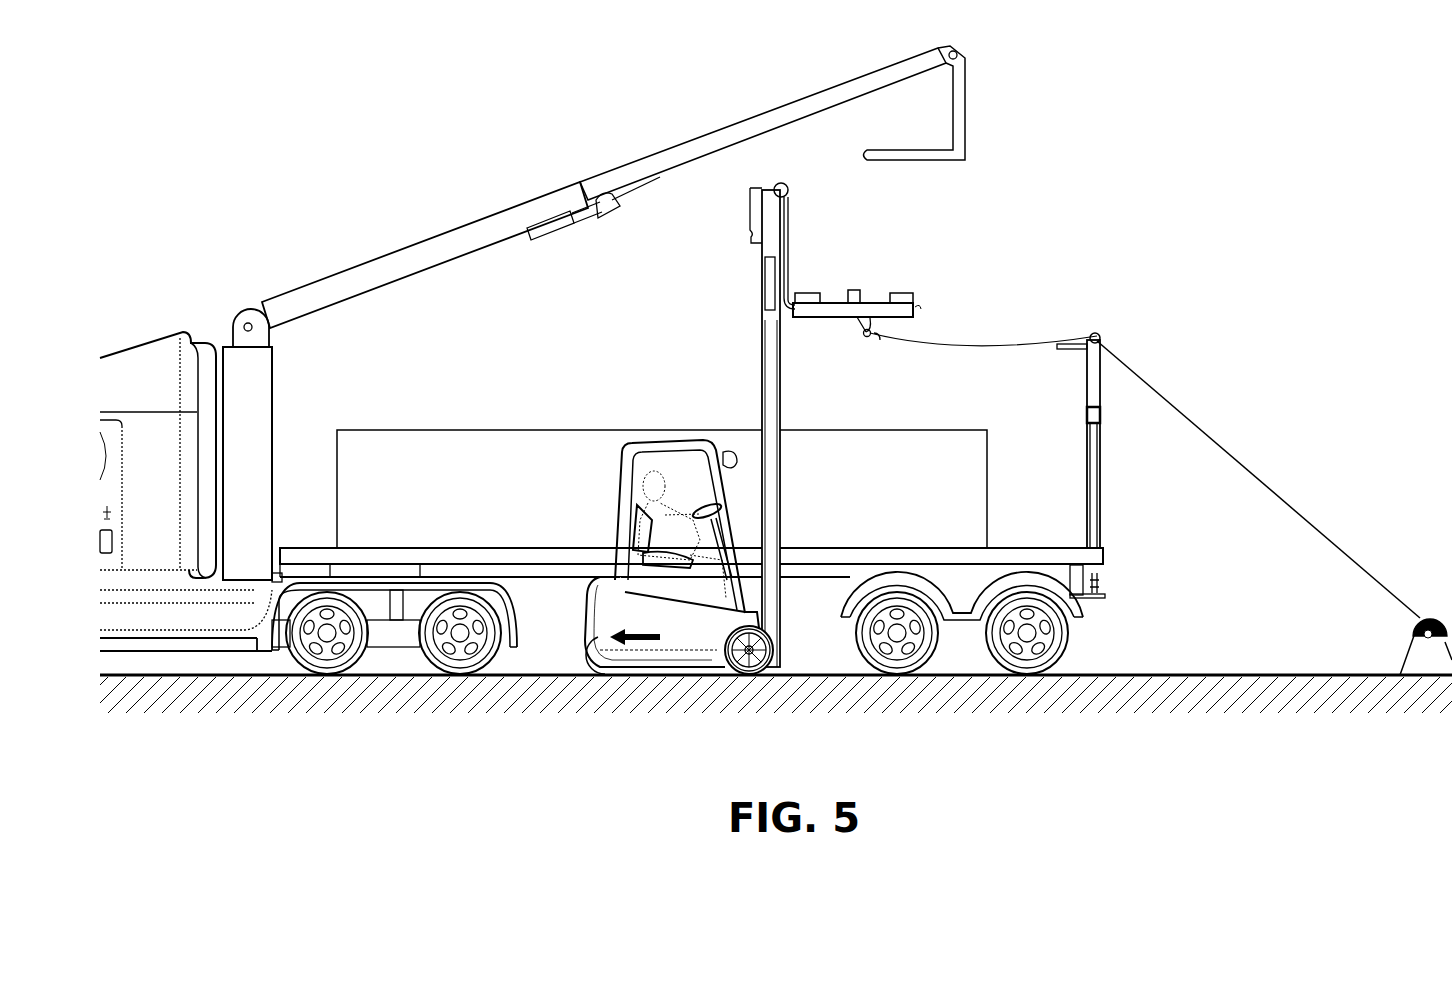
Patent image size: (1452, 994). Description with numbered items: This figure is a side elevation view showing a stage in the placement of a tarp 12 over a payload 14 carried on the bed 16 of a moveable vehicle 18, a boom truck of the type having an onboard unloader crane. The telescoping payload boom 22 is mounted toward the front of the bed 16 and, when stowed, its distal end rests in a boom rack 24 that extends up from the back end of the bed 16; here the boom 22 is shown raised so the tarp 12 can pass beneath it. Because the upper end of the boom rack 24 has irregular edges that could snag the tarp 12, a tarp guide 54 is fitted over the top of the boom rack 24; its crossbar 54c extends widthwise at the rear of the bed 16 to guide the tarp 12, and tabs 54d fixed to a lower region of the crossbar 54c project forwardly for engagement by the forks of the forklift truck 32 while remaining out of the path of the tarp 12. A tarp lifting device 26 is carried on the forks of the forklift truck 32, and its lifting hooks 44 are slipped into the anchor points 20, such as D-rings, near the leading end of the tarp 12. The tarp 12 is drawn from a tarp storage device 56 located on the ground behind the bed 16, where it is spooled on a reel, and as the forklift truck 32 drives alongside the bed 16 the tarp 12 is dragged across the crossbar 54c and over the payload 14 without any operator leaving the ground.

The tarp 12 is at (1002, 340).
The payload 14 is at (463, 497).
The bed 16 is at (1004, 548).
The moveable vehicle 18 is at (147, 342).
The anchor points 20 is at (880, 340).
The telescoping payload boom 22 is at (718, 131).
The boom rack 24 is at (1101, 490).
The tarp lifting device 26 is at (852, 290).
The forklift truck 32 is at (690, 638).
The lifting hooks 44 is at (865, 338).
The tarp guide 54 is at (1106, 366).
The crossbar 54c is at (1098, 333).
The tabs 54d is at (1062, 352).
The tarp storage device 56 is at (1410, 655).